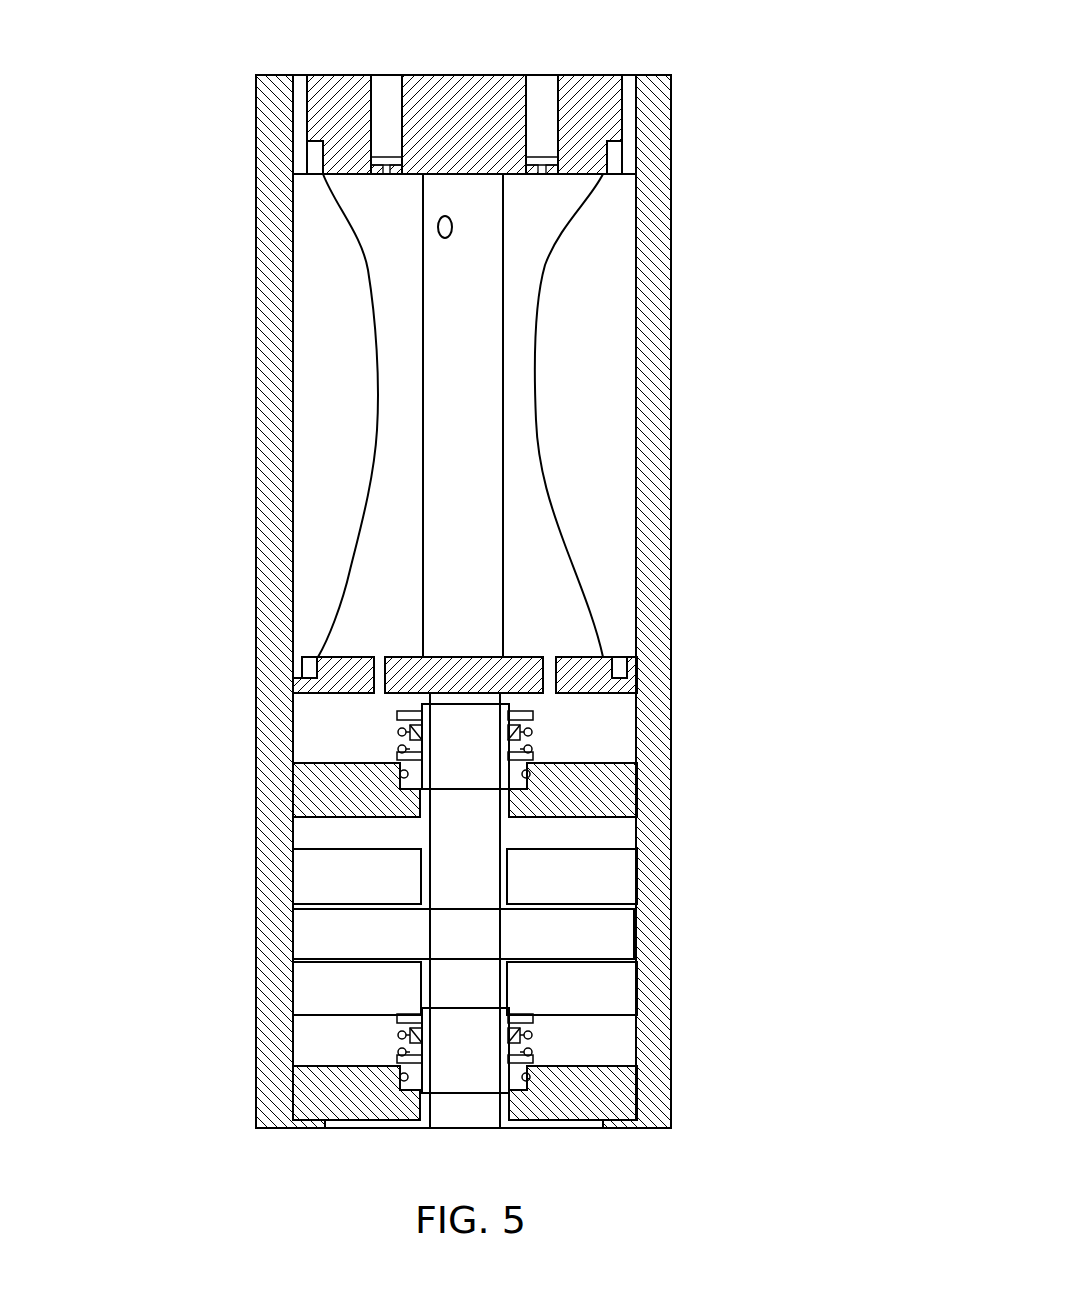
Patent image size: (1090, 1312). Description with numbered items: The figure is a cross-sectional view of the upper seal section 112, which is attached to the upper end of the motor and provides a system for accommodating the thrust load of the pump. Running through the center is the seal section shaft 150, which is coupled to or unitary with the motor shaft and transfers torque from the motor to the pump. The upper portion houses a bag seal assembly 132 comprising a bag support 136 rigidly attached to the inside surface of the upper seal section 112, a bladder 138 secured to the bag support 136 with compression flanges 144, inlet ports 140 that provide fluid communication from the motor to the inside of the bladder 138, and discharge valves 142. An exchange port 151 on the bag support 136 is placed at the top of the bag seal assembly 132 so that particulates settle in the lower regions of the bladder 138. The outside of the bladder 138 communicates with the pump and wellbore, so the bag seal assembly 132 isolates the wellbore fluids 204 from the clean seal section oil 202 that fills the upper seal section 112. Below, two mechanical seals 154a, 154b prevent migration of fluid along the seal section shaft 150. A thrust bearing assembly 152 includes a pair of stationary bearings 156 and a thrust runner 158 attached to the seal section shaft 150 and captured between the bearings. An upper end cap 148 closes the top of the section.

The upper seal section 112 is at (118, 376).
The bag seal assembly 132 is at (293, 379).
The bag support 136 is at (523, 570).
The bladder 138 is at (545, 483).
The inlet ports 140 is at (370, 683).
The discharge valves 142 is at (552, 98).
The compression flanges 144 is at (619, 141).
The upper end cap 148 is at (483, 353).
The seal section shaft 150 is at (487, 837).
The exchange port 151 is at (452, 227).
The thrust bearing assembly 152 is at (496, 910).
The mechanical seal 154a is at (400, 1015).
The mechanical seal 154b is at (397, 757).
The stationary bearings 156 is at (613, 873).
The thrust runner 158 is at (608, 940).
The seal section oil 202 is at (393, 632).
The wellbore fluids 204 is at (346, 320).